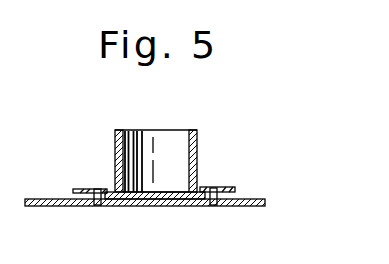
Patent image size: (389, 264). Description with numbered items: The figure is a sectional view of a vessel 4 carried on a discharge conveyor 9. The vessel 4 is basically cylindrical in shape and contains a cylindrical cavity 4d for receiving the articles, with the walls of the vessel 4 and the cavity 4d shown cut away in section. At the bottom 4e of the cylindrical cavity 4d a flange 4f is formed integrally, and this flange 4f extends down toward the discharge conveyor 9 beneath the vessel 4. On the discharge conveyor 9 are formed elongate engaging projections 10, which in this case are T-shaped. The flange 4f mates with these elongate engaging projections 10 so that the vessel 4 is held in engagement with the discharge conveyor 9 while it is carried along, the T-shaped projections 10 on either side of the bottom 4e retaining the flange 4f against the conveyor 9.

The vessel 4 is at (196, 131).
The cylindrical cavity 4d is at (161, 136).
The bottom 4e is at (182, 207).
The flange 4f is at (102, 206).
The discharge conveyor 9 is at (153, 207).
The elongate engaging projections 10 is at (87, 189).